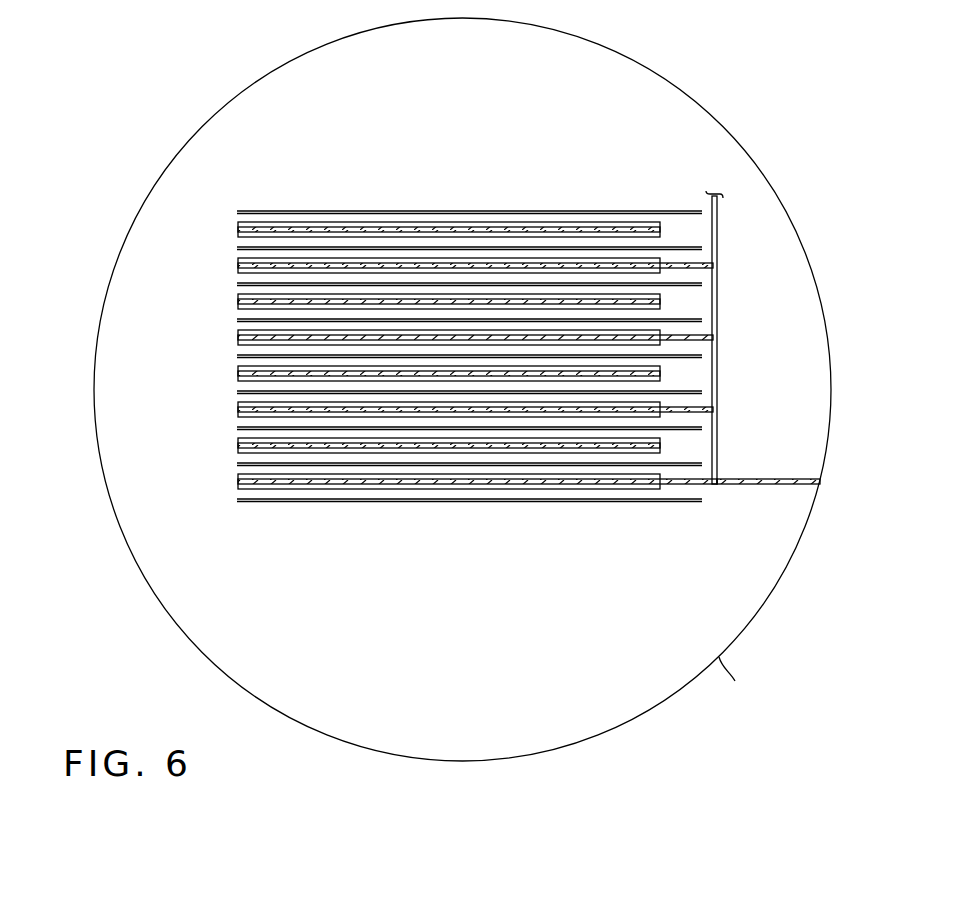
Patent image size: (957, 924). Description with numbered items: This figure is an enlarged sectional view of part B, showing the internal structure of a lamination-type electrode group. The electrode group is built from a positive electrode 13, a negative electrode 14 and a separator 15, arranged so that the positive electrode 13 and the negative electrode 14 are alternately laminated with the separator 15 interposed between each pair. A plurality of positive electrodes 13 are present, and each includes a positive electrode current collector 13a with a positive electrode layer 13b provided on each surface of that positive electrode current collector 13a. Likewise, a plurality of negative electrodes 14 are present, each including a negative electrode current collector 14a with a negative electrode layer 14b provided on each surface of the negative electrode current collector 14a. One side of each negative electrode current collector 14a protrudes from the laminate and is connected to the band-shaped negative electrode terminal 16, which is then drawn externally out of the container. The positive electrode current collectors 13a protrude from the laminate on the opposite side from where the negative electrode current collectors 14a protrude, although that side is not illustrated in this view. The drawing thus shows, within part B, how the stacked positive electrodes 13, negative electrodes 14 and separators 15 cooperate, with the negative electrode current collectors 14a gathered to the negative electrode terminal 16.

The positive electrode 13 is at (383, 362).
The positive electrode current collector 13a is at (243, 446).
The positive electrode layer 13b is at (242, 440).
The negative electrode 14 is at (466, 411).
The negative electrode current collector 14a is at (692, 262).
The negative electrode layer 14b is at (242, 477).
The separator 15 is at (531, 210).
The negative electrode terminal 16 is at (763, 486).
The part B is at (731, 683).